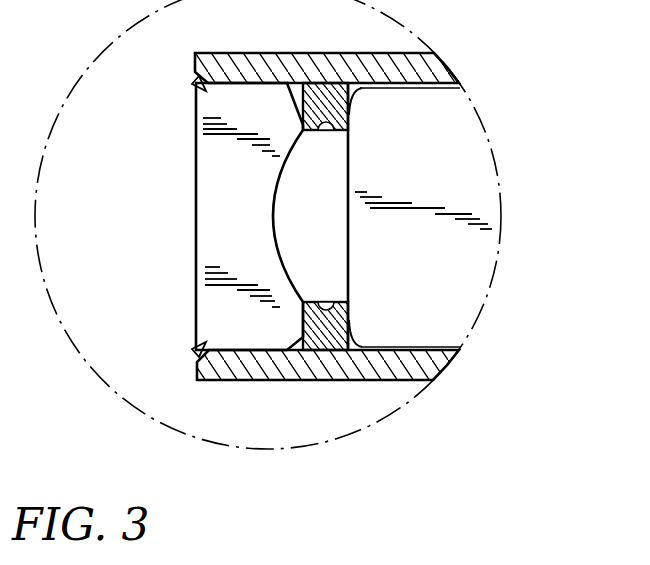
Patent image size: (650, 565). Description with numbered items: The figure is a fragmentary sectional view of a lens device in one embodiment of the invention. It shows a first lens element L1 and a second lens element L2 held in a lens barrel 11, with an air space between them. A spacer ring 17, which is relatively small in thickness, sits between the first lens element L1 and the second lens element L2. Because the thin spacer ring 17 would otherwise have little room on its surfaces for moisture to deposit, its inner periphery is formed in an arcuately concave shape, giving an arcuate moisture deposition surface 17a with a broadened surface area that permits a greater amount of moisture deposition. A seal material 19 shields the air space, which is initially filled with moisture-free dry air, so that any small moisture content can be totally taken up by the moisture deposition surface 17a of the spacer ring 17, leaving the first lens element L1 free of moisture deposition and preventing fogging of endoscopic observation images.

The lens barrel 11 is at (425, 76).
The seal material 19 is at (195, 86).
The spacer ring 17 is at (320, 342).
The moisture deposition surface 17a is at (326, 140).
The first lens element L1 is at (211, 205).
The second lens element L2 is at (480, 267).